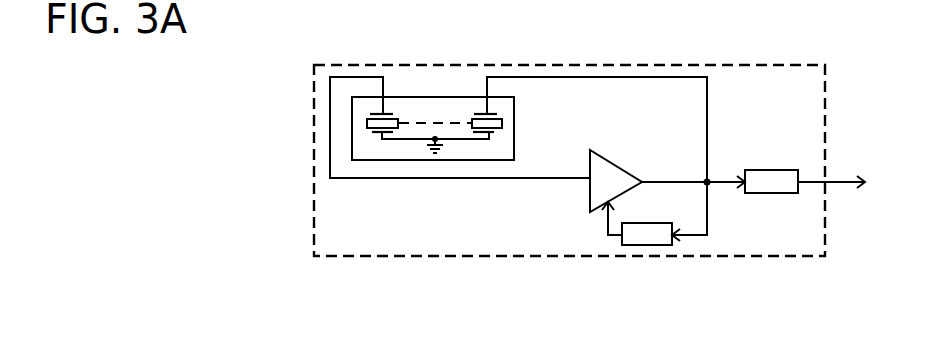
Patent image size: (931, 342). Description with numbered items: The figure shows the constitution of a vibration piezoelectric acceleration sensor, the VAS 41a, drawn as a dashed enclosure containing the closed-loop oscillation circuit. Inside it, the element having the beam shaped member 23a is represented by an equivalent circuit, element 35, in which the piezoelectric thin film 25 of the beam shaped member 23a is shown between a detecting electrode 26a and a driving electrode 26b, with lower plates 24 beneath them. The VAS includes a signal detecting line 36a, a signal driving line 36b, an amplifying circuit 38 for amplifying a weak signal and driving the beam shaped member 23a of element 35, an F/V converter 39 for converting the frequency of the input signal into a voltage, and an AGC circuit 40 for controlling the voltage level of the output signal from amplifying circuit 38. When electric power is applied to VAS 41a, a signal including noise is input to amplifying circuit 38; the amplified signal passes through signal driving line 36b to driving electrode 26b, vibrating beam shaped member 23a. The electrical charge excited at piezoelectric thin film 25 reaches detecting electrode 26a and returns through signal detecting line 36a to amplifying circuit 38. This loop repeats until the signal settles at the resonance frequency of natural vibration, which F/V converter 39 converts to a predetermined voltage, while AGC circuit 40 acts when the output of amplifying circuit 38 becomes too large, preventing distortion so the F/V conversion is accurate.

The beam shaped member 23a is at (452, 122).
The lower electrode plate 24 is at (377, 133).
The piezoelectric thin film 25 is at (365, 123).
The detecting electrode 26a is at (377, 113).
The driving electrode 26b is at (493, 113).
The element 35 is at (412, 97).
The signal detecting line 36a is at (351, 76).
The signal driving line 36b is at (508, 75).
The amplifying circuit 38 is at (614, 164).
The F/V converter 39 is at (778, 193).
The AGC circuit 40 is at (650, 245).
The VAS 41a is at (383, 256).